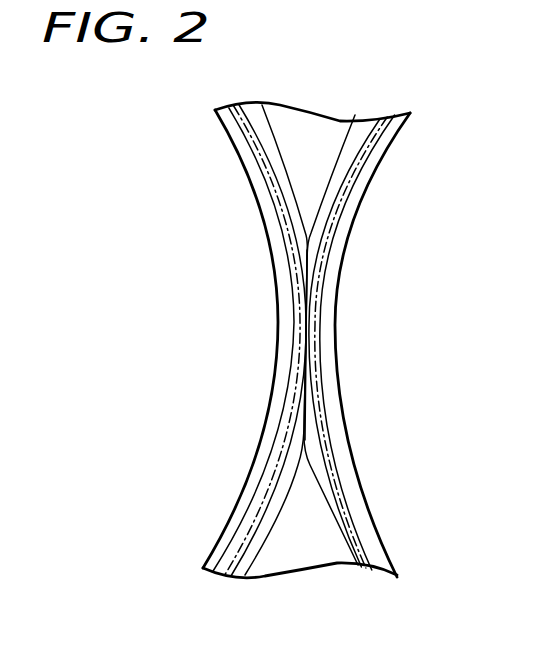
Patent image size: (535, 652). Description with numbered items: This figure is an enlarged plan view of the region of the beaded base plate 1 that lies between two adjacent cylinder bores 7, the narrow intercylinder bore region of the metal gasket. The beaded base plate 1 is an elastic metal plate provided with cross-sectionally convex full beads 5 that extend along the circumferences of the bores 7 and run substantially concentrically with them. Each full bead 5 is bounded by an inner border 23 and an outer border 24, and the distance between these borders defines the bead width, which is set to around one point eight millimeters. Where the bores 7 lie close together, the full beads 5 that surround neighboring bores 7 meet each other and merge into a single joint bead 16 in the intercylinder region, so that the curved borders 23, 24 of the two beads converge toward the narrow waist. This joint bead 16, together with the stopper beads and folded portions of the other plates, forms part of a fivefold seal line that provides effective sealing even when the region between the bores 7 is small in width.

The beaded base plate 1 is at (422, 98).
The full bead 5 is at (272, 182).
The bore 7 is at (271, 252).
The joint bead 16 is at (307, 340).
The inner border 23 is at (268, 478).
The outer border 24 is at (272, 137).